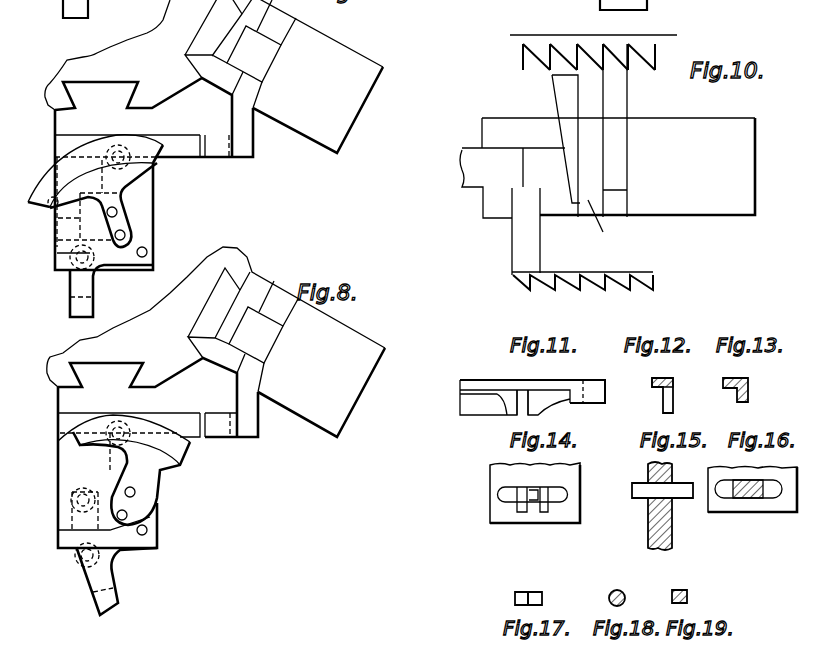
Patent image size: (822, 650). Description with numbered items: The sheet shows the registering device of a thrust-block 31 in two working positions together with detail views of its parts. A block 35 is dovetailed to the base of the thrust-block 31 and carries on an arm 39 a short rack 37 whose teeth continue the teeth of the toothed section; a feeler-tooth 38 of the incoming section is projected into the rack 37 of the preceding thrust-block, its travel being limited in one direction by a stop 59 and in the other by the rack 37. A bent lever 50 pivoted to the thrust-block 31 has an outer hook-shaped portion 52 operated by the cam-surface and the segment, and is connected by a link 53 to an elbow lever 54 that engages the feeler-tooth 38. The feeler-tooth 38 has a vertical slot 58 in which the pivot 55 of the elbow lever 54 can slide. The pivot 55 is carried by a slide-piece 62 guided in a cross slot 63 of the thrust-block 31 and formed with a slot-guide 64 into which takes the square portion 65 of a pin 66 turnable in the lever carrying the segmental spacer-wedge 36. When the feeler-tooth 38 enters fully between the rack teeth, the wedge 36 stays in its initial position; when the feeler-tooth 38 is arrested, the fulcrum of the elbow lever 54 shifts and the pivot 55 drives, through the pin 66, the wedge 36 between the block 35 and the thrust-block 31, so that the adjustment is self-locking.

In FIG. 10, the thrust-block 31 is at (603, 226).
In FIG. 7, the block 35 is at (254, 54).
In FIG. 10, the block 35 is at (540, 157).
In FIG. 7, the spacer-wedge 36 is at (80, 152).
In FIG. 8, the spacer-wedge 36 is at (180, 452).
In FIG. 10, the spacer-wedge 36 is at (567, 97).
In FIG. 7, the rack 37 is at (208, 143).
In FIG. 8, the rack 37 is at (218, 427).
In FIG. 10, the rack 37 is at (653, 52).
In FIG. 8, the feeler-tooth 38 is at (192, 425).
In FIG. 10, the feeler-tooth 38 is at (613, 98).
In FIG. 11, the feeler-tooth 38 is at (552, 380).
In FIG. 7, the arm 39 is at (248, 123).
In FIG. 10, the arm 39 is at (528, 248).
In FIG. 7, the bent lever 50 is at (92, 9).
In FIG. 7, the hook-shaped portion 52 is at (80, 303).
In FIG. 8, the hook-shaped portion 52 is at (123, 600).
In FIG. 10, the hook-shaped portion 52 is at (644, 5).
In FIG. 7, the link 53 is at (72, 229).
In FIG. 7, the elbow lever 54 is at (133, 187).
In FIG. 15, the pivot 55 is at (683, 497).
In FIG. 11, the vertical slot 58 is at (518, 397).
In FIG. 11, the stop 59 is at (470, 410).
In FIG. 16, the slide-piece 62 is at (745, 500).
In FIG. 14, the cross slot 63 is at (505, 494).
In FIG. 16, the cross slot 63 is at (775, 492).
In FIG. 14, the slot-guide 64 is at (533, 513).
In FIG. 15, the slot-guide 64 is at (650, 528).
In FIG. 17, the square portion 65 is at (540, 590).
In FIG. 19, the square portion 65 is at (688, 590).
In FIG. 7, the pin 66 is at (114, 211).
In FIG. 8, the pin 66 is at (132, 492).
In FIG. 17, the pin 66 is at (515, 594).
In FIG. 18, the pin 66 is at (617, 590).